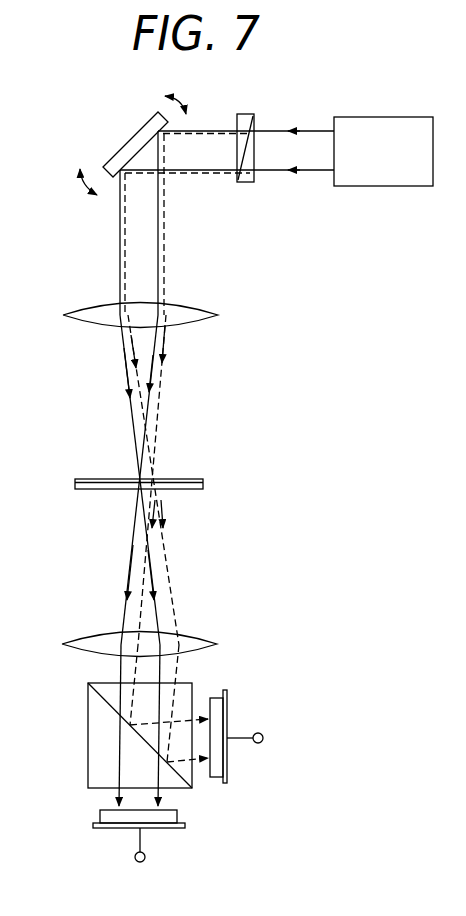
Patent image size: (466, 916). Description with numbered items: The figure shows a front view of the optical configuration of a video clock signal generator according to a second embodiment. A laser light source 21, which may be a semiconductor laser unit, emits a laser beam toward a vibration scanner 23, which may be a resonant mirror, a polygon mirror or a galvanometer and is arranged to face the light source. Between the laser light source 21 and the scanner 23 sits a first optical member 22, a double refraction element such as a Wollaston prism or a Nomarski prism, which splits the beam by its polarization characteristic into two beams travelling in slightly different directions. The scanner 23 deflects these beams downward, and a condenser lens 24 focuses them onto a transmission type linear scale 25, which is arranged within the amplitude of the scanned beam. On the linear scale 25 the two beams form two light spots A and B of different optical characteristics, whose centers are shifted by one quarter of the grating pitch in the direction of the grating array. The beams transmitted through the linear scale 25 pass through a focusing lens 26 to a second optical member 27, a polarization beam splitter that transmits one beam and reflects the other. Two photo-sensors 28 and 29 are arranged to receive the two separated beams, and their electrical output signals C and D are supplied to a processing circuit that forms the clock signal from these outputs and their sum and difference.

The laser light source 21 is at (402, 117).
The first optical member 22 is at (248, 114).
The vibration scanner 23 is at (133, 137).
The condenser lens 24 is at (202, 308).
The transmission type linear scale 25 is at (203, 482).
The focusing lens 26 is at (202, 637).
The second optical member 27 is at (88, 728).
The photo-sensor 28 is at (100, 815).
The photo-sensor 29 is at (228, 708).
The light spot A is at (133, 476).
The light spot B is at (166, 476).
The electrical output signal C is at (141, 882).
The electrical output signal D is at (284, 744).